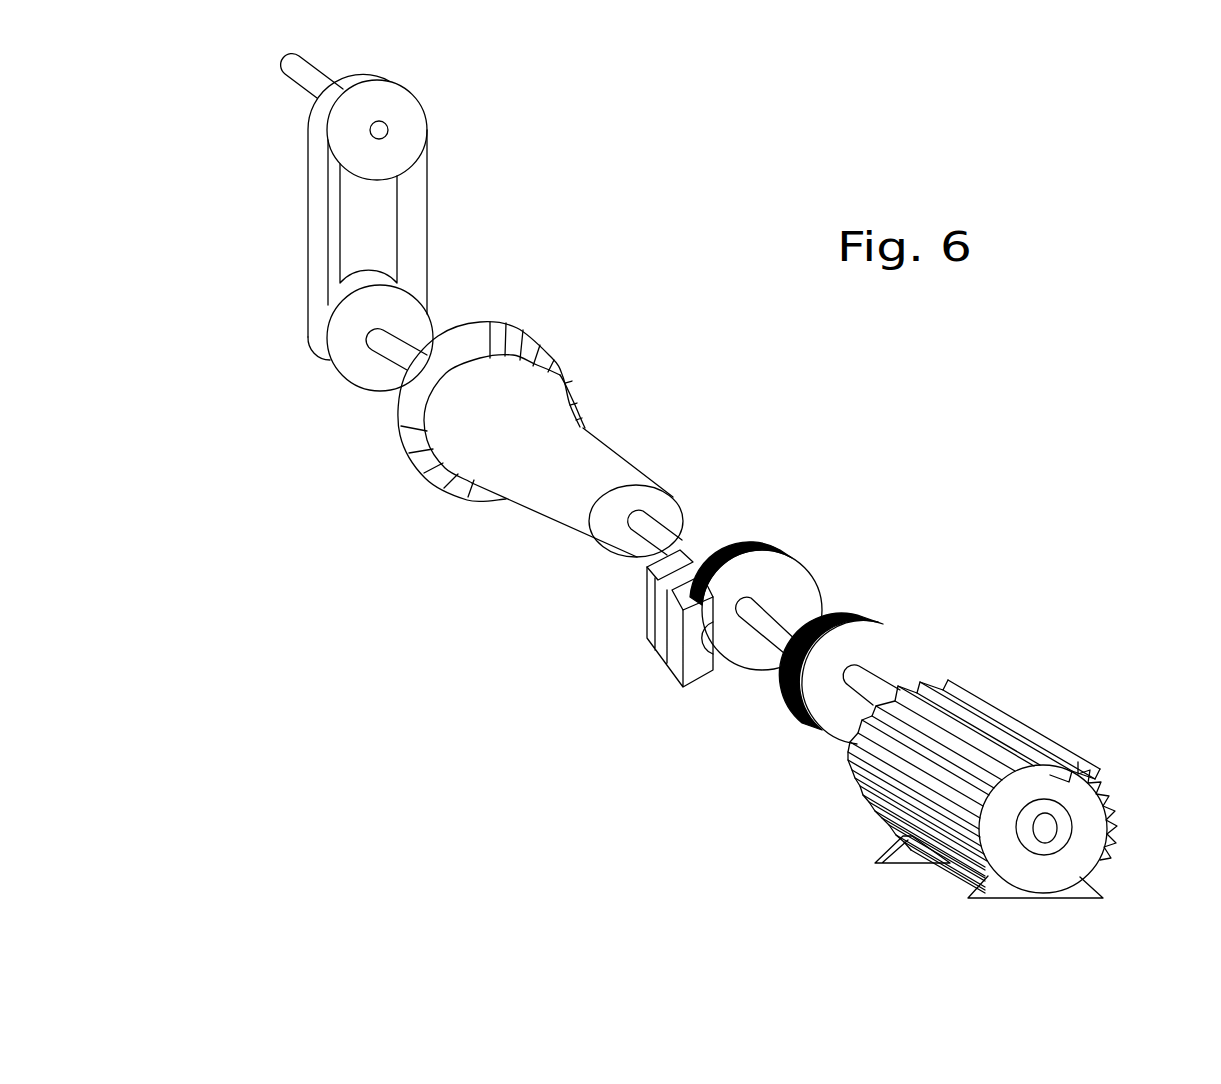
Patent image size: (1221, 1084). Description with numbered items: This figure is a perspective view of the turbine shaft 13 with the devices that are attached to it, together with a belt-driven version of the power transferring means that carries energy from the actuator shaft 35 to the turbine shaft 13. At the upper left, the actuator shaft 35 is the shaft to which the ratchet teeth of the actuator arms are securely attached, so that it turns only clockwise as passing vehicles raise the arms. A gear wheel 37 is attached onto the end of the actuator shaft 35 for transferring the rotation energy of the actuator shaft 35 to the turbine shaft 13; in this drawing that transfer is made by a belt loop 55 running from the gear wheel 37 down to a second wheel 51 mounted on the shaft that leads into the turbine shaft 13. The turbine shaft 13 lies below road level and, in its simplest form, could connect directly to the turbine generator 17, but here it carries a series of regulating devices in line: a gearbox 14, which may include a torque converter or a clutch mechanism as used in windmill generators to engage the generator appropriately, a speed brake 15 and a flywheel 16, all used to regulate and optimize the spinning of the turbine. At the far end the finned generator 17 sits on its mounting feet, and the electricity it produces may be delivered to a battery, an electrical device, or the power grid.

The actuator shaft 35 is at (292, 77).
The gear wheel 37 is at (425, 105).
The belt 55 is at (425, 213).
The pulley 51 is at (435, 320).
The gearbox 14 is at (590, 428).
The turbine shaft 13 is at (692, 542).
The speed brake 15 is at (668, 607).
The flywheel 16 is at (812, 727).
The generator 17 is at (1073, 760).